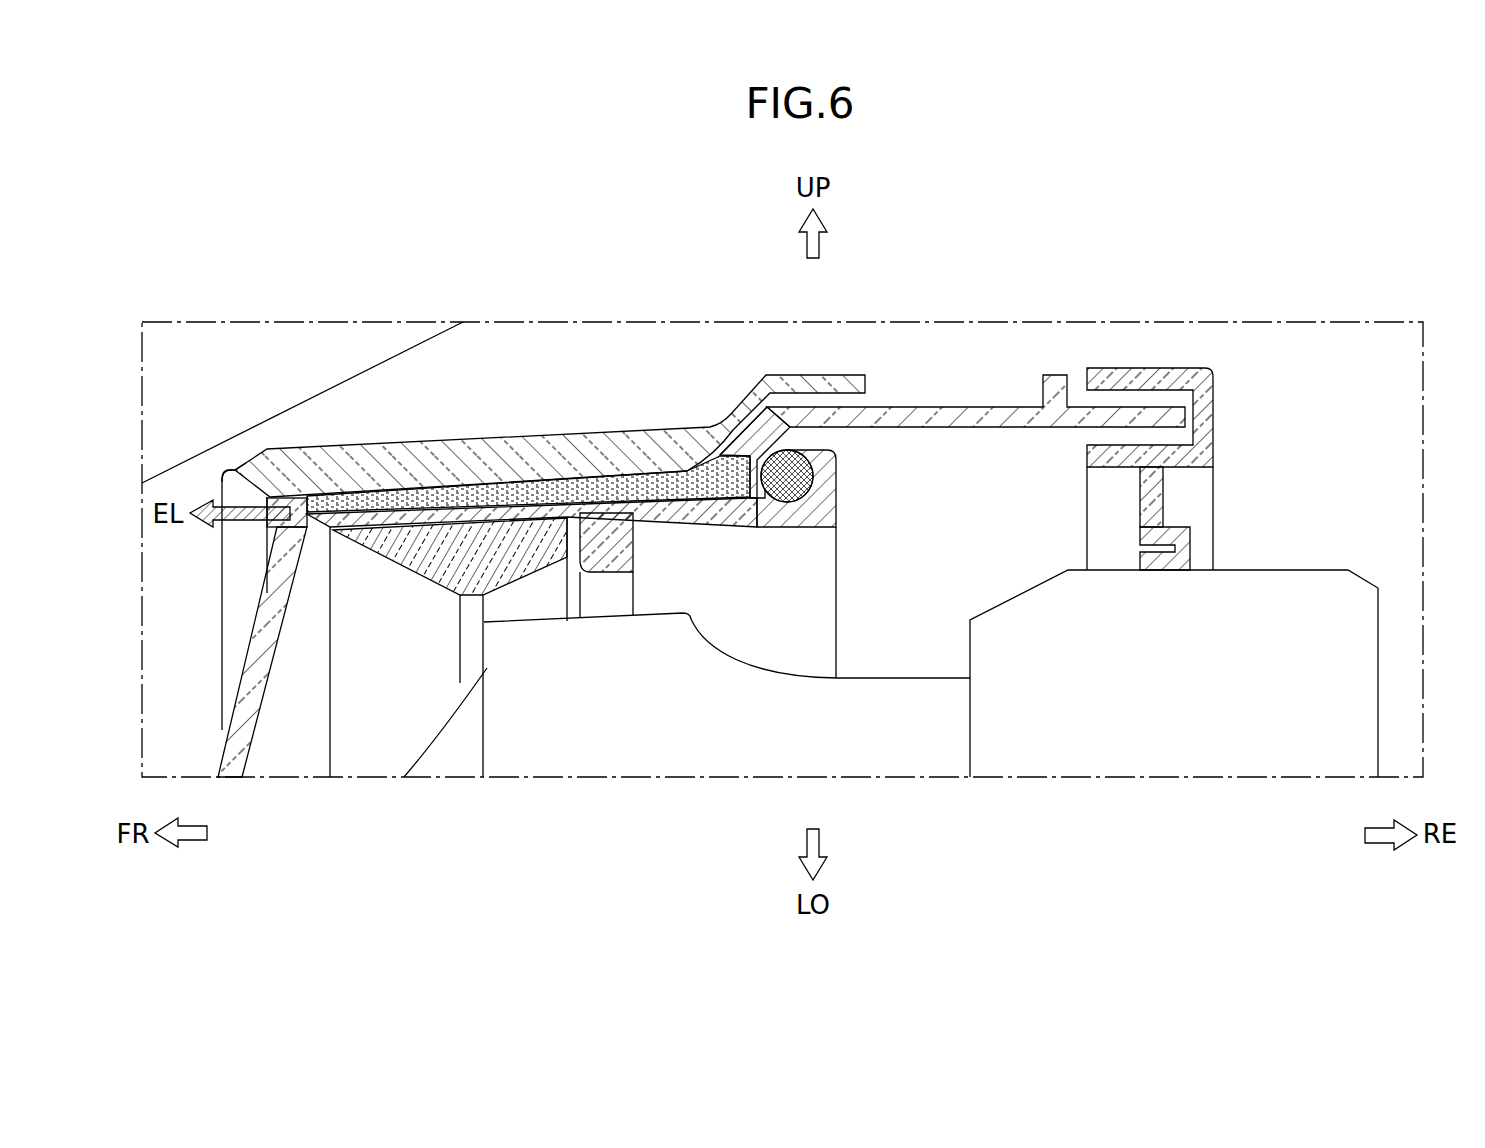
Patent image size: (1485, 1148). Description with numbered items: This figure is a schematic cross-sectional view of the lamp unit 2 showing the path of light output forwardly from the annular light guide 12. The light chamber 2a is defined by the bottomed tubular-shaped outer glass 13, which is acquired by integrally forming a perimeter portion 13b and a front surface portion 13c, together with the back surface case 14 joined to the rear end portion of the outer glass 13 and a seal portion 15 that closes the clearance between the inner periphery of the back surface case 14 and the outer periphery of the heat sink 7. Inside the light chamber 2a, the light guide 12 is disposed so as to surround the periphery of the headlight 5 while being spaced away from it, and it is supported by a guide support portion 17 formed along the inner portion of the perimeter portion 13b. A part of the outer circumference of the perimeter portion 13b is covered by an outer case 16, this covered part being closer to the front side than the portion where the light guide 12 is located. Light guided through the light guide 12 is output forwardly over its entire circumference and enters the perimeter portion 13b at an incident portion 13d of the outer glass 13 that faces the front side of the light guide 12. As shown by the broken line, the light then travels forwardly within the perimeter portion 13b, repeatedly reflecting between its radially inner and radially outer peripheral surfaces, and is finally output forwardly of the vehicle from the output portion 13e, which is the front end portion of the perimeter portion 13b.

The lamp unit 2 is at (574, 400).
The light chamber 2a is at (370, 716).
The headlight 5 is at (573, 740).
The heat sink 7 is at (1186, 757).
The light guide 12 is at (789, 447).
The outer glass 13 is at (225, 243).
The perimeter portion 13b is at (357, 506).
The front surface portion 13c is at (259, 594).
The incident portion 13d is at (742, 487).
The output portion 13e is at (238, 468).
The back surface case 14 is at (1178, 370).
The seal portion 15 is at (1195, 540).
The outer case 16 is at (464, 462).
The guide support portion 17 is at (718, 520).